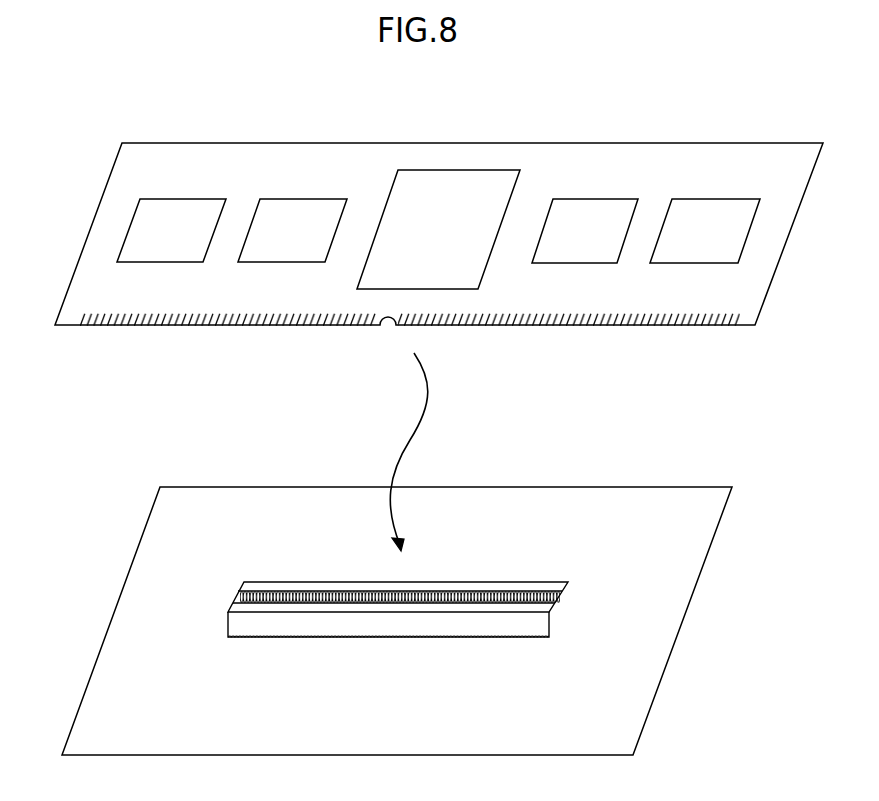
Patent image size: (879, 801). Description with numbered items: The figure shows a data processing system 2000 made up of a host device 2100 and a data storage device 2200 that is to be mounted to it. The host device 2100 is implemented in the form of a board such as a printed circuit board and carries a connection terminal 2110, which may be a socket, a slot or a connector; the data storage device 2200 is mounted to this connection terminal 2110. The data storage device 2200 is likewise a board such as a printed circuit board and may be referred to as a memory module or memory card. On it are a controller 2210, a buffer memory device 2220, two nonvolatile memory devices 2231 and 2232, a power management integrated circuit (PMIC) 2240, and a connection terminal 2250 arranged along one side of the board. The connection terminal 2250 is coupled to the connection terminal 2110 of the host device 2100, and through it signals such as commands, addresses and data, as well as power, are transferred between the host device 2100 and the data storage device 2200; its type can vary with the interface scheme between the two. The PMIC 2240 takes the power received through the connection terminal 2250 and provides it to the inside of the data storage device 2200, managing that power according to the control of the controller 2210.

The data processing system 2000 is at (95, 100).
The host device 2100 is at (397, 621).
The connection terminal 2110 is at (593, 573).
The data storage device 2200 is at (439, 259).
The controller 2210 is at (438, 229).
The buffer memory device 2220 is at (292, 230).
The nonvolatile memory device 2231 is at (585, 231).
The nonvolatile memory device 2232 is at (705, 231).
The power management integrated circuit (PMIC) 2240 is at (171, 230).
The connection terminal 2250 is at (105, 325).